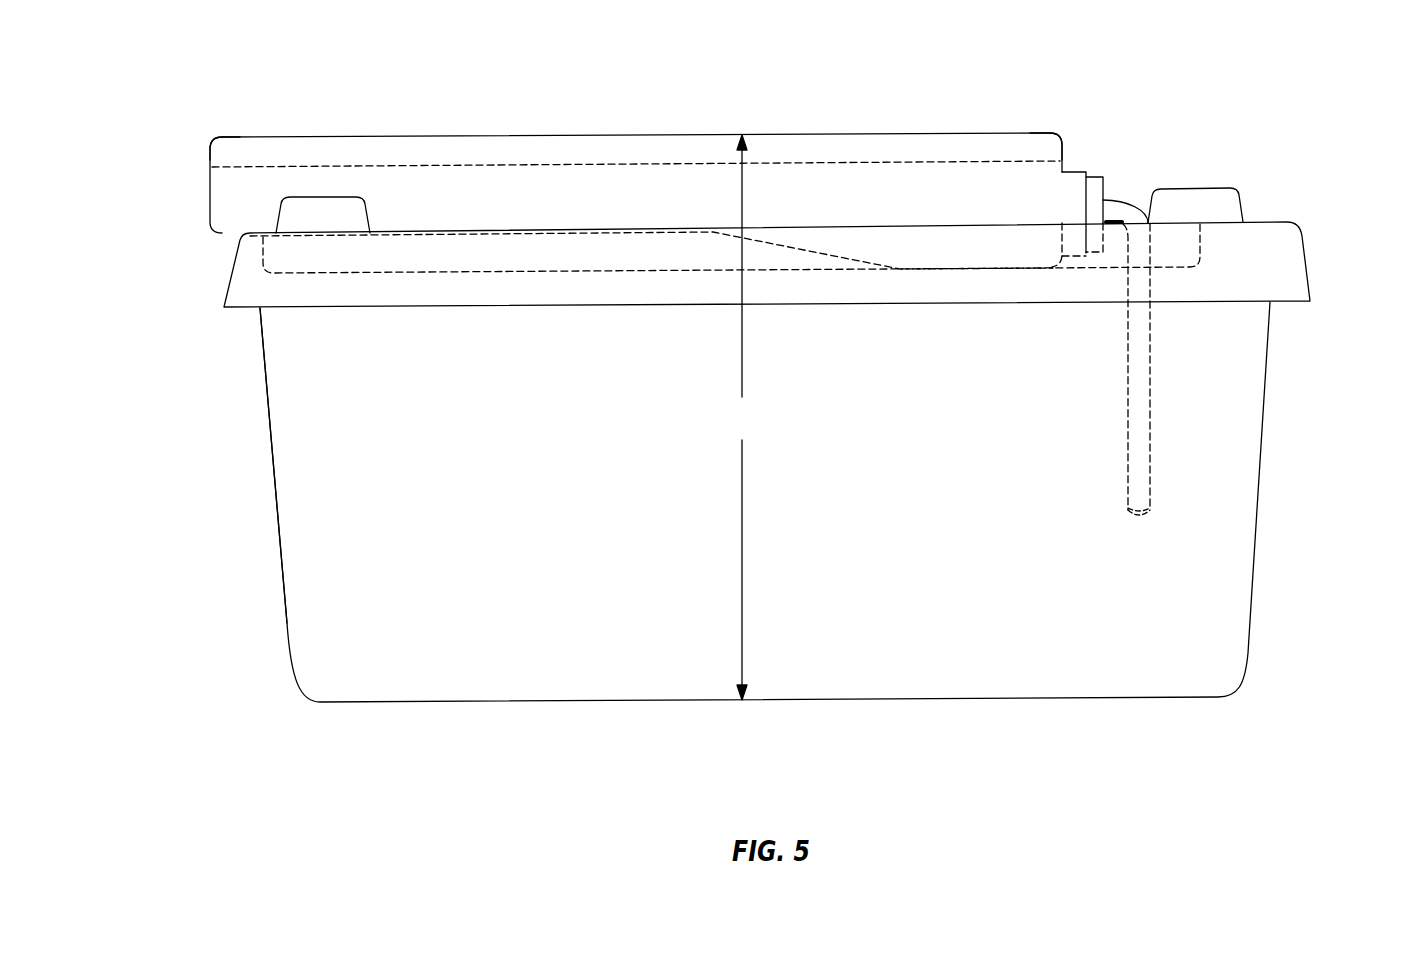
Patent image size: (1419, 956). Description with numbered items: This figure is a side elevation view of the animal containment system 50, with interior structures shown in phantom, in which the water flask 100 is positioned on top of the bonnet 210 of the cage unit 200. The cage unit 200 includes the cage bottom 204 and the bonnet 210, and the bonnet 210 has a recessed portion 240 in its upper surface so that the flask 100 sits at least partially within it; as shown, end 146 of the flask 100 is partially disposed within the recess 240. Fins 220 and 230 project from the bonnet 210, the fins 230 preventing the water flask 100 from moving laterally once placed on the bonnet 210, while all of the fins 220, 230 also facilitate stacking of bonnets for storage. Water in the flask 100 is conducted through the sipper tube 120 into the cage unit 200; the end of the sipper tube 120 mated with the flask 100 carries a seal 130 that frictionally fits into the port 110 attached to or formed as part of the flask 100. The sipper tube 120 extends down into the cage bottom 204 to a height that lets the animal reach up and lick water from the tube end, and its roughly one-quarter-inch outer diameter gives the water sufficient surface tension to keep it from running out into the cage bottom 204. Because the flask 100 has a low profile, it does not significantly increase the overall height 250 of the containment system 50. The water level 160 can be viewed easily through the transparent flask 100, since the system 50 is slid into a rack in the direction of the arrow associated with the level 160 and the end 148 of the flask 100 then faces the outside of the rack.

The animal containment system 50 is at (162, 442).
The water flask 100 is at (565, 135).
The port 110 is at (1072, 182).
The sipper tube 120 is at (1153, 397).
The seal 130 is at (1097, 192).
The end of the flask 146 is at (1028, 122).
The end of the flask 148 is at (230, 128).
The water level 160 is at (204, 165).
The cage unit 200 is at (1313, 288).
The cage bottom 204 is at (282, 568).
The bonnet 210 is at (1303, 242).
The fins 220 is at (1187, 188).
The fins 230 is at (318, 195).
The recessed portion 240 is at (462, 268).
The height 250 is at (742, 417).